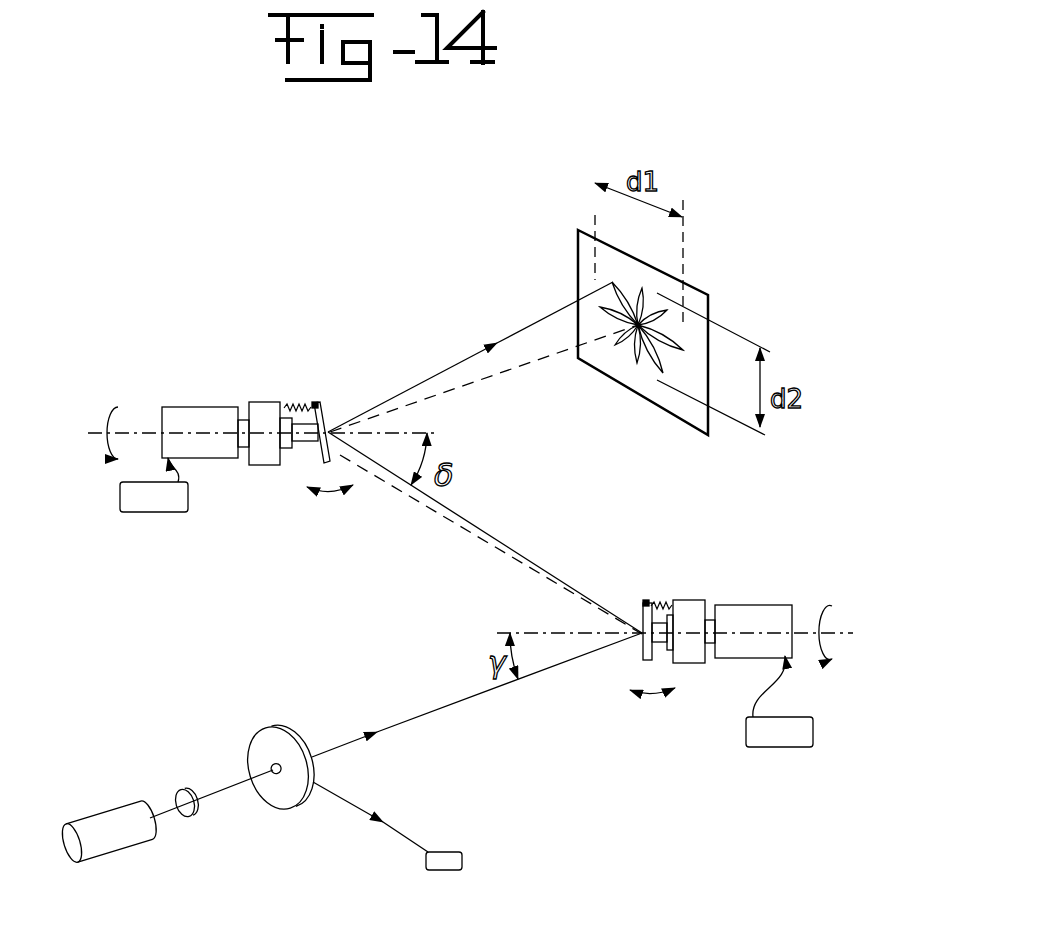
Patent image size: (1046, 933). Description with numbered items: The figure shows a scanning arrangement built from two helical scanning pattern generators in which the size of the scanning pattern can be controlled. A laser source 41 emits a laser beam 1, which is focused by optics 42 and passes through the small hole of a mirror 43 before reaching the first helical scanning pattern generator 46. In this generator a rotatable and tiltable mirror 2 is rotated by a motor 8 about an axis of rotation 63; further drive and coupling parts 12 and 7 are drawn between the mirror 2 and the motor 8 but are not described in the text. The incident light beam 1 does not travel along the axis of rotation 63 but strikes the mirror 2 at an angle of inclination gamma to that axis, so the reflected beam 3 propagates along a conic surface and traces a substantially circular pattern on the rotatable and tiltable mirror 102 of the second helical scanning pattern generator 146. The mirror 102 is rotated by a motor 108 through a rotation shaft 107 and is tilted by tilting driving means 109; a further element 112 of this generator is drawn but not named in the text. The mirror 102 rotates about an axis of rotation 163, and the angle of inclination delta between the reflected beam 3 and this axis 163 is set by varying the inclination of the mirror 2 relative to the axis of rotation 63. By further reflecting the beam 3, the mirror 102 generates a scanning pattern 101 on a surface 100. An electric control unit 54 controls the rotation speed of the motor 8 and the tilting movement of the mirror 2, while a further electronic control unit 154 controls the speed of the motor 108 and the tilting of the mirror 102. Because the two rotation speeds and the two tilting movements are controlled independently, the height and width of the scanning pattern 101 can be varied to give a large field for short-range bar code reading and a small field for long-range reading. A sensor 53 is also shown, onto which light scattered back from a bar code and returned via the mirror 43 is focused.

The laser beam 1 is at (415, 713).
The rotatable and tiltable mirror 2 is at (645, 603).
The reflected laser beam 3 is at (512, 548).
The coupling 7 is at (708, 620).
The motor 8 is at (760, 615).
The oscillating drive 12 is at (690, 603).
The laser source 41 is at (105, 815).
The optics 42 is at (182, 795).
The mirror 43 is at (266, 745).
The first helical scanning pattern generator 46 is at (717, 670).
The sensor 53 is at (445, 855).
The electric control unit 54 is at (775, 747).
The axis of rotation 63 is at (835, 621).
The surface 100 is at (697, 300).
The scanning pattern 101 is at (613, 282).
The rotatable and tiltable mirror 102 is at (317, 403).
The rotation shaft 107 is at (240, 420).
The motor 108 is at (185, 425).
The tilting driving means 109 is at (300, 405).
The oscillating drive 112 is at (262, 402).
The second helical scanning pattern generator 146 is at (243, 483).
The further electronic control unit 154 is at (150, 512).
The axis of rotation 163 is at (102, 442).